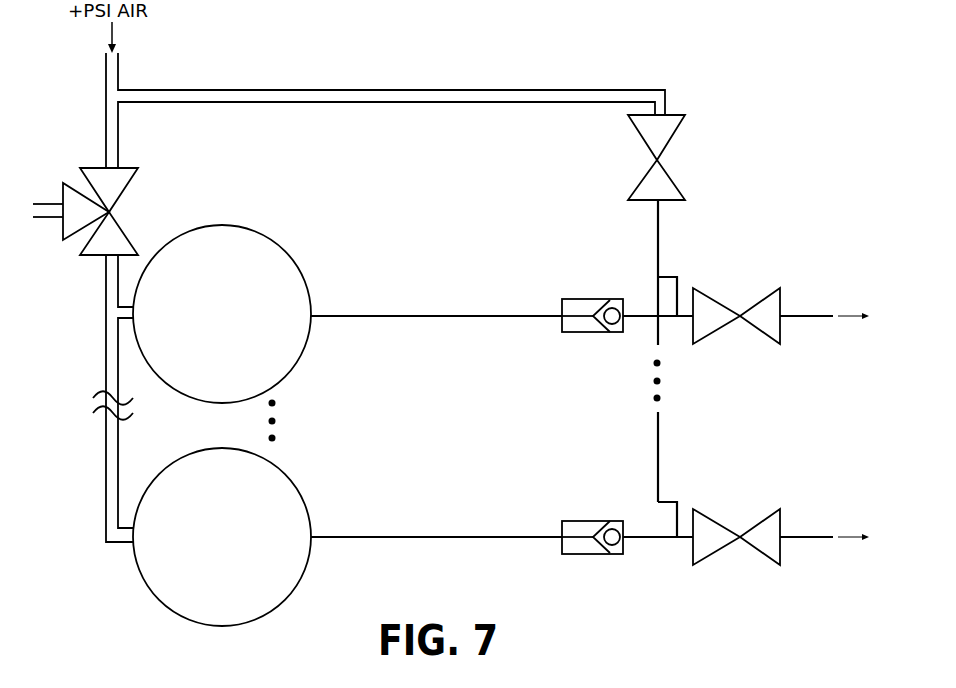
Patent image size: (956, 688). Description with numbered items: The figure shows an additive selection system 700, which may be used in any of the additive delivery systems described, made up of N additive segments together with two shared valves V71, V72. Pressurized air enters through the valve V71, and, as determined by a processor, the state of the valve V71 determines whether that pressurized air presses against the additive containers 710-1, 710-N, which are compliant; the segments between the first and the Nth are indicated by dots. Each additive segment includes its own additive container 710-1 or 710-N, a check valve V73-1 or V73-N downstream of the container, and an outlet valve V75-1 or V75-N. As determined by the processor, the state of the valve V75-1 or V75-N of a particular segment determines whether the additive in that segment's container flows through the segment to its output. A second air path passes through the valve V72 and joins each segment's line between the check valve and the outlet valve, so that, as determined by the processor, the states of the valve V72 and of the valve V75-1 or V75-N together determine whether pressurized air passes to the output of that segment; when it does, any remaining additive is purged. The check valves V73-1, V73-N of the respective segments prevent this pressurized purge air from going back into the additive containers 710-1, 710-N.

The additive selection system 700 is at (700, 49).
The valve V71 is at (94, 211).
The valve V72 is at (665, 157).
The additive container 710-1 is at (194, 324).
The additive container 710-N is at (248, 547).
The check valve V73-1 is at (592, 305).
The check valve V73-N is at (592, 526).
The valve V75-1 is at (736, 309).
The valve V75-N is at (736, 531).